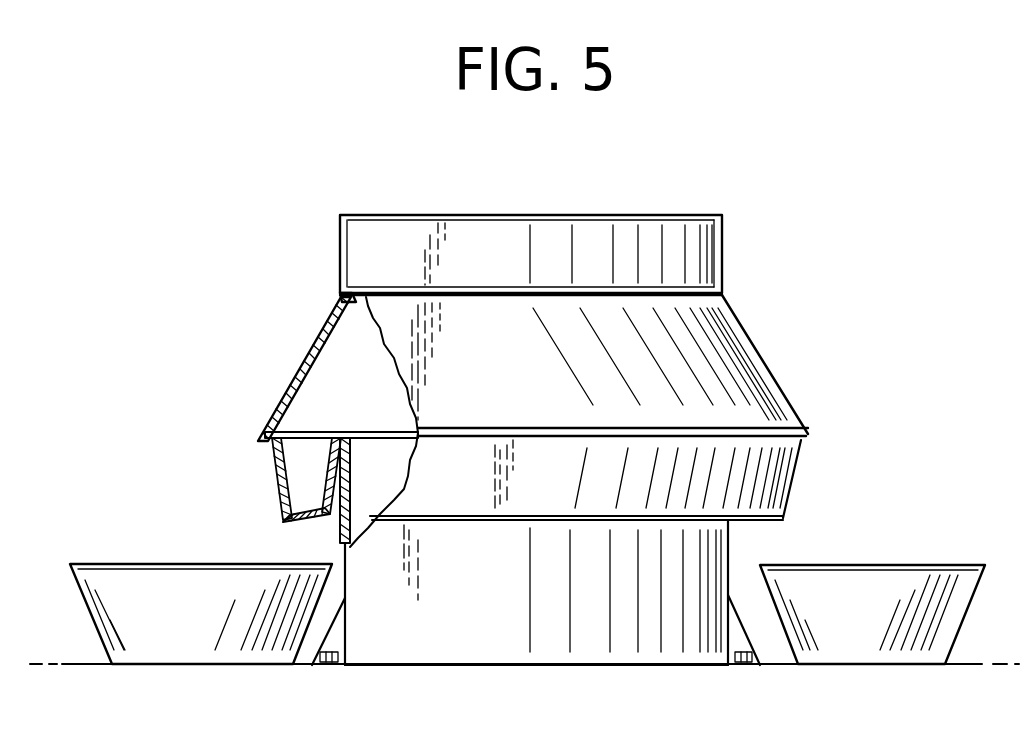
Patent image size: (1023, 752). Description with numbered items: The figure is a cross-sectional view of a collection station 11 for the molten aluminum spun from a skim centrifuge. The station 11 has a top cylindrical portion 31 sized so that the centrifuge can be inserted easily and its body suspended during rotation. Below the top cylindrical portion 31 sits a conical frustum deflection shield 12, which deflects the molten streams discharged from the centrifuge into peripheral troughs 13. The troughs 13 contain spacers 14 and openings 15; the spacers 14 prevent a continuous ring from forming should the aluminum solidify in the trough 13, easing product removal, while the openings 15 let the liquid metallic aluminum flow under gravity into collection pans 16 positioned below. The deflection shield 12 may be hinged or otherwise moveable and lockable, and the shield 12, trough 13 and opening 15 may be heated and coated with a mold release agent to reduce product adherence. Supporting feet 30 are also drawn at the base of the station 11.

The collection station 11 is at (587, 215).
The conical frustum deflection shield 12 is at (310, 348).
The trough 13 is at (277, 472).
The spacer 14 is at (305, 450).
The opening 15 is at (298, 522).
The collection pan 16 is at (178, 562).
The support foot 30 is at (318, 645).
The top cylindrical portion 31 is at (724, 250).